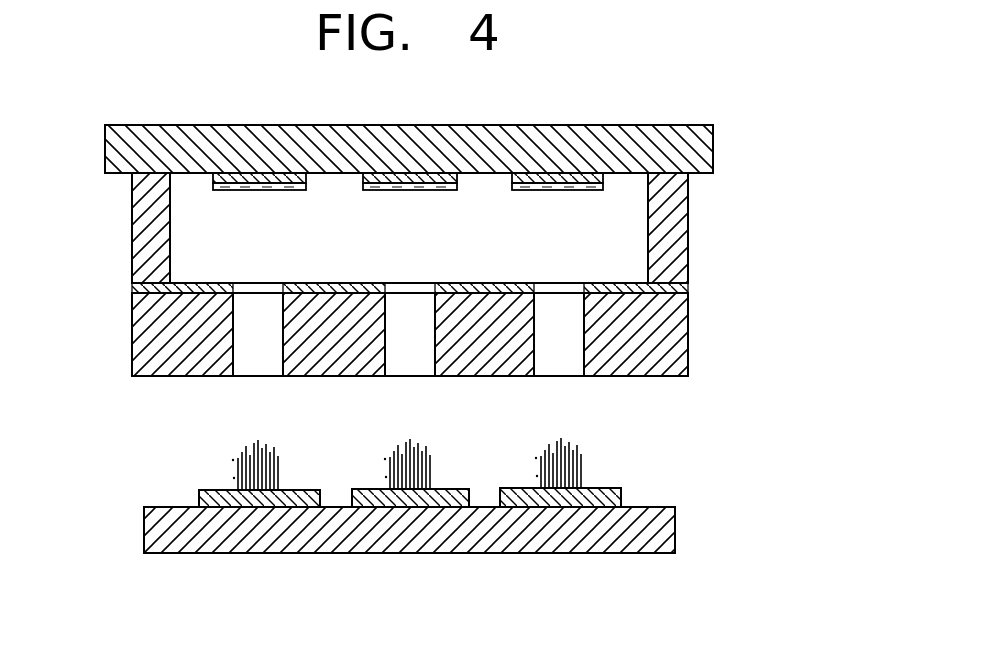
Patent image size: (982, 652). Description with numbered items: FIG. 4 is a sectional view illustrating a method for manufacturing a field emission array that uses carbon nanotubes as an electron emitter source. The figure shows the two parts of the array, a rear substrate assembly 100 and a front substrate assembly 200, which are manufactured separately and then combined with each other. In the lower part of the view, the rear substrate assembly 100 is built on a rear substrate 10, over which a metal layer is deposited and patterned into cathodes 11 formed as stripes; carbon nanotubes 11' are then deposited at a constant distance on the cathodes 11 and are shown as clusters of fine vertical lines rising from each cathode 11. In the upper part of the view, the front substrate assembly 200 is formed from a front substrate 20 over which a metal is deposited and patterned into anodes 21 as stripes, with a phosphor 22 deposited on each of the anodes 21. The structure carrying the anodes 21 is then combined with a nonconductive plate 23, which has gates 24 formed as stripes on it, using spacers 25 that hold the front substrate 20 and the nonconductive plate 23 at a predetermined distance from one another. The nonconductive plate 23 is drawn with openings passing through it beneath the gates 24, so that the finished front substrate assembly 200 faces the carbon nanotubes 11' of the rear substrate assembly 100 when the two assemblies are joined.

The front substrate 20 is at (700, 143).
The anodes 21 is at (306, 183).
The phosphor 22 is at (272, 190).
The nonconductive plate 23 is at (682, 337).
The gates 24 is at (682, 286).
The spacers 25 is at (680, 215).
The front substrate assembly 200 is at (80, 125).
The rear substrate 10 is at (665, 537).
The cathodes 11 is at (476, 487).
The carbon nanotubes 11' is at (460, 458).
The rear substrate assembly 100 is at (85, 458).